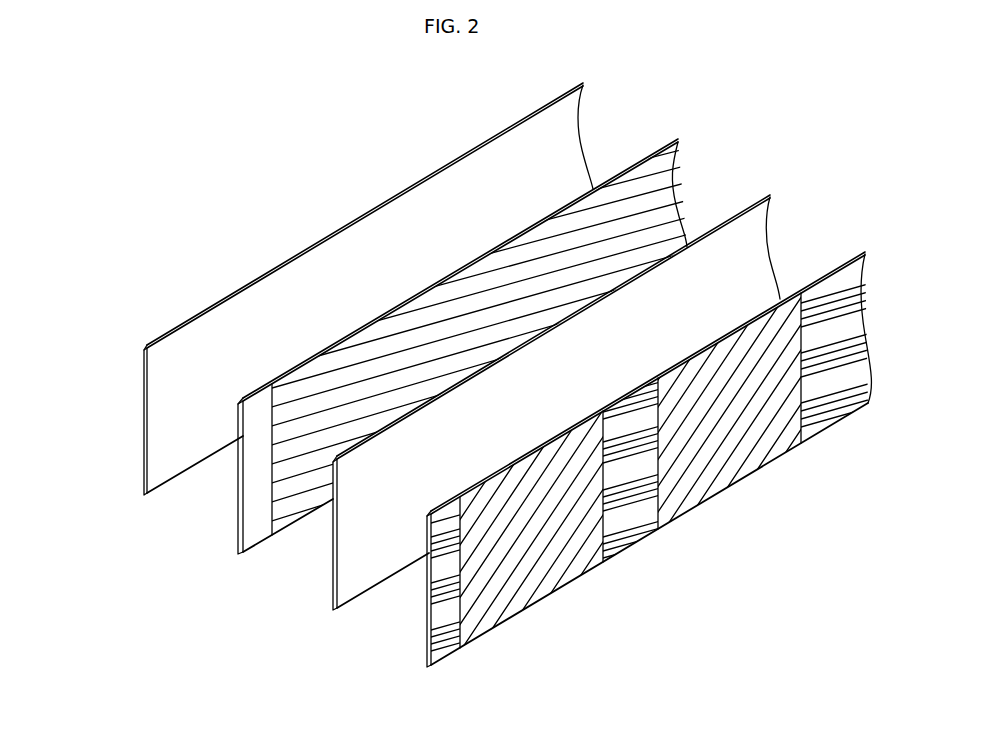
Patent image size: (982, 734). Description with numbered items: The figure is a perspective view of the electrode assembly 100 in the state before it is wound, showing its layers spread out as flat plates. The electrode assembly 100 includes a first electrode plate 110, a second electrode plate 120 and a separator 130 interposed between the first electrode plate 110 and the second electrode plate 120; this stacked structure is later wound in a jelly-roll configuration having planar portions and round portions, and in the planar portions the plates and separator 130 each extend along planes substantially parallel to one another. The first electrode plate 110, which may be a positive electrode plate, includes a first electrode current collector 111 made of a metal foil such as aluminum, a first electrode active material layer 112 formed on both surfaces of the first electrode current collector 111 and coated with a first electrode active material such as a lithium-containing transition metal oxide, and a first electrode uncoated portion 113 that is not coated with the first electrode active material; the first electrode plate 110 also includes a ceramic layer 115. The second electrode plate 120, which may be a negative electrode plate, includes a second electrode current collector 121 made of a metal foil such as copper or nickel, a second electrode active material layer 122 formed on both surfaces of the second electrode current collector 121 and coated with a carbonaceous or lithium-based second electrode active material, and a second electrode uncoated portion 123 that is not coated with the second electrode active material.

The electrode assembly 100 is at (123, 103).
The first electrode plate 110 is at (643, 468).
The first electrode current collector 111 is at (580, 577).
The first electrode active material layer 112 is at (511, 596).
The first electrode uncoated portion 113 is at (647, 384).
The ceramic layer 115 is at (632, 528).
The second electrode plate 120 is at (416, 339).
The second electrode current collector 121 is at (324, 507).
The second electrode active material layer 122 is at (297, 502).
The second electrode uncoated portion 123 is at (255, 532).
The separator 130 is at (128, 430).